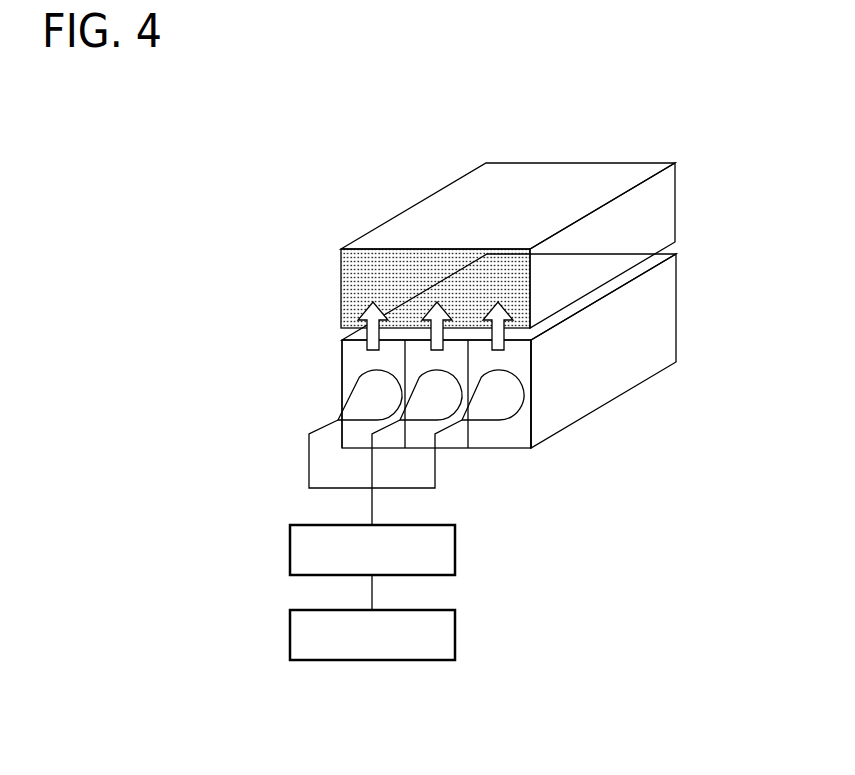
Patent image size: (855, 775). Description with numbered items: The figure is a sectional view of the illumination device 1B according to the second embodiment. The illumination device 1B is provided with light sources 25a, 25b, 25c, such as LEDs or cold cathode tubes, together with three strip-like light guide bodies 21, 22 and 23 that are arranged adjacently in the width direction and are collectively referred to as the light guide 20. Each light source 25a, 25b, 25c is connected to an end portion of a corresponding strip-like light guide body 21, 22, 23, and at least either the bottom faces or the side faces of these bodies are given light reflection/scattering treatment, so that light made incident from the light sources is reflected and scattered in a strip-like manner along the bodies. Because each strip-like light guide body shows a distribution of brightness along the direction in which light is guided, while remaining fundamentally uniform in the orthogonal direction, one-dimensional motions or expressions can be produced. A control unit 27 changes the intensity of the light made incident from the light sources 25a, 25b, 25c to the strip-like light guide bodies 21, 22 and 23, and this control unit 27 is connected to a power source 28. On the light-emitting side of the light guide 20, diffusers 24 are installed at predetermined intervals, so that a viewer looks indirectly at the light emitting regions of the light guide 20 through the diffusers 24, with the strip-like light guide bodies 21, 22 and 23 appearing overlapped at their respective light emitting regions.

The illumination device 1B is at (333, 222).
The light guide 20 is at (452, 424).
The first strip-like light guide body 21 is at (369, 445).
The second strip-like light guide body 22 is at (411, 445).
The third strip-like light guide body 23 is at (562, 445).
The diffuser 24 is at (502, 248).
The light source 25a is at (365, 389).
The light source 25b is at (433, 383).
The light source 25c is at (515, 396).
The control unit 27 is at (290, 550).
The power source 28 is at (290, 634).